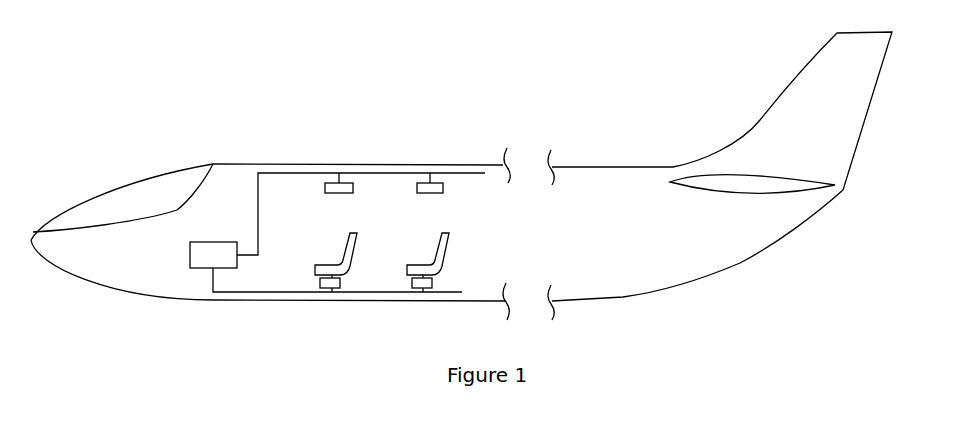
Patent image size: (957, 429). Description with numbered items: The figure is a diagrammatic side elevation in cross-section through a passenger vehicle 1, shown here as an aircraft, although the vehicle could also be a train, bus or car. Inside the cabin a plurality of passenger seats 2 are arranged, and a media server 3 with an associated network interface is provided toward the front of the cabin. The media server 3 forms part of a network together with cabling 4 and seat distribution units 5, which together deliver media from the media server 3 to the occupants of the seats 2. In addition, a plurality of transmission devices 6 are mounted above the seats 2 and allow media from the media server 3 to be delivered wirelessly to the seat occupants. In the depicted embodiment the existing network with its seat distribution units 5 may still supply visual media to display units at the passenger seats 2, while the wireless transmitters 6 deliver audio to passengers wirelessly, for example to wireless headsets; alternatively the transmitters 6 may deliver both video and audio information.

The vehicle 1 is at (654, 308).
The passenger seats 2 is at (356, 247).
The media server 3 is at (190, 258).
The cabling 4 is at (283, 292).
The seat distribution units 5 is at (341, 282).
The transmission devices 6 is at (337, 195).